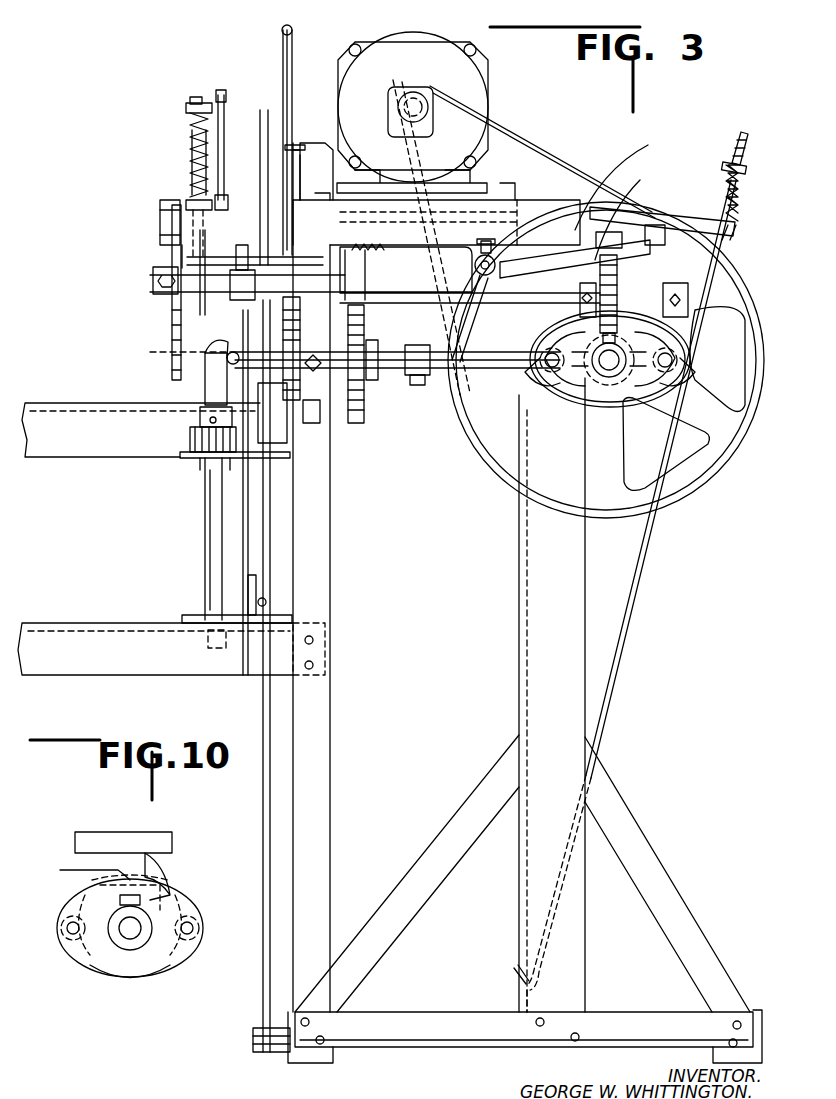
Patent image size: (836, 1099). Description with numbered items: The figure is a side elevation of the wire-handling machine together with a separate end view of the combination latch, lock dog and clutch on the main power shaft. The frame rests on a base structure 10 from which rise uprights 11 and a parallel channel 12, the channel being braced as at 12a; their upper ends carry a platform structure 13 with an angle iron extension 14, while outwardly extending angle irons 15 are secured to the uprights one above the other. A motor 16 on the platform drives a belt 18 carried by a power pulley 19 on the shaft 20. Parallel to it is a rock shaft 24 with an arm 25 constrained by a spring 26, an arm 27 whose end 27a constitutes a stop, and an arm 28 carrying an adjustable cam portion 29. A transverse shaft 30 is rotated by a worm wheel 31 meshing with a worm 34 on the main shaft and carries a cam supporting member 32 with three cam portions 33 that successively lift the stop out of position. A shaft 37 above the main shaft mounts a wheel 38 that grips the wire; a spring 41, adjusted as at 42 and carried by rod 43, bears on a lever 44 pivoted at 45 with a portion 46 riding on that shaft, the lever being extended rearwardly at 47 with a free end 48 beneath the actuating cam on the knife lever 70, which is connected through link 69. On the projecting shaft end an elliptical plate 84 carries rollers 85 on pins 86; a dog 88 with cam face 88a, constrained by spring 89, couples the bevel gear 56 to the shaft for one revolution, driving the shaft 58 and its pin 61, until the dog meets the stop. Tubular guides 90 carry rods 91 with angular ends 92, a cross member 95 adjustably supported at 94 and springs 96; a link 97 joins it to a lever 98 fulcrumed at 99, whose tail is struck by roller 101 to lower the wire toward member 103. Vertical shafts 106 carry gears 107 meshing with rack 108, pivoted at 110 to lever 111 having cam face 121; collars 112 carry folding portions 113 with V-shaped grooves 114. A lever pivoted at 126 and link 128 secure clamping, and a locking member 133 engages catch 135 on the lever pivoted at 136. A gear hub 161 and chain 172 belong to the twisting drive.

In FIG. 3, the base structure 10 is at (622, 1030).
In FIG. 3, the uprights 11 is at (330, 605).
In FIG. 3, the channel 12 is at (540, 612).
In FIG. 3, the brace 12a is at (628, 840).
In FIG. 3, the platform structure 13 is at (510, 203).
In FIG. 3, the angle iron extension 14 is at (300, 163).
In FIG. 3, the outwardly extending angle irons 15 is at (138, 665).
In FIG. 3, the motor 16 is at (470, 87).
In FIG. 3, the belt 18 is at (762, 470).
In FIG. 3, the power pulley 19 is at (700, 490).
In FIG. 3, the shaft 20 is at (622, 385).
In FIG. 10, the shaft 20 is at (130, 940).
In FIG. 3, the rock shaft 24 is at (478, 255).
In FIG. 3, the arm 25 is at (473, 310).
In FIG. 3, the spring 26 is at (364, 272).
In FIG. 3, the arm 27 is at (575, 259).
In FIG. 10, the arm 27 is at (110, 838).
In FIG. 3, the stop end 27a is at (724, 355).
In FIG. 3, the arm 28 is at (623, 209).
In FIG. 3, the adjustable cam portion 29 is at (616, 250).
In FIG. 3, the shaft 30 is at (465, 285).
In FIG. 3, the worm wheel 31 is at (625, 225).
In FIG. 3, the cam supporting member 32 is at (690, 290).
In FIG. 3, the cam portions 33 is at (700, 380).
In FIG. 3, the worm 34 is at (555, 455).
In FIG. 3, the shaft 37 is at (766, 212).
In FIG. 3, the wheel 38 is at (614, 177).
In FIG. 3, the spring 41 is at (742, 195).
In FIG. 3, the tension adjustment 42 is at (725, 150).
In FIG. 3, the rod 43 is at (615, 660).
In FIG. 3, the lever 44 is at (690, 215).
In FIG. 3, the pivot 45 is at (548, 203).
In FIG. 3, the portion riding on shaft 46 is at (298, 140).
In FIG. 3, the rearward extension 47 is at (372, 239).
In FIG. 3, the free end 48 is at (315, 143).
In FIG. 10, the bevel gear 56 is at (140, 975).
In FIG. 3, the shaft 58 is at (445, 380).
In FIG. 3, the pin 61 is at (308, 423).
In FIG. 3, the link 69 is at (294, 60).
In FIG. 3, the lever 70 is at (283, 57).
In FIG. 3, the elliptical plate 84 is at (540, 400).
In FIG. 10, the elliptical plate 84 is at (80, 955).
In FIG. 3, the rollers 85 is at (433, 457).
In FIG. 10, the rollers 85 is at (131, 971).
In FIG. 3, the pins 86 is at (535, 372).
In FIG. 10, the pins 86 is at (195, 926).
In FIG. 10, the dog 88 is at (168, 868).
In FIG. 10, the cam face 88a is at (165, 900).
In FIG. 10, the spring 89 is at (82, 872).
In FIG. 3, the tubular guides 90 is at (180, 250).
In FIG. 3, the rod 91 is at (190, 165).
In FIG. 3, the angular end 92 is at (208, 316).
In FIG. 3, the adjustable support 94 is at (192, 100).
In FIG. 3, the cross member 95 is at (216, 95).
In FIG. 3, the springs 96 is at (192, 140).
In FIG. 3, the link 97 is at (226, 140).
In FIG. 3, the lever 98 is at (262, 215).
In FIG. 3, the fulcrum 99 is at (242, 245).
In FIG. 3, the roller 101 is at (232, 350).
In FIG. 3, the member 103 is at (172, 345).
In FIG. 3, the vertically mounted shafts 106 is at (205, 520).
In FIG. 3, the gears 107 is at (188, 440).
In FIG. 3, the rack 108 is at (228, 462).
In FIG. 3, the rack pivot end 110 is at (268, 455).
In FIG. 3, the lever 111 is at (272, 535).
In FIG. 3, the collar portion 112 is at (200, 415).
In FIG. 3, the folding portions 113 is at (205, 395).
In FIG. 3, the V-shaped groove 114 is at (210, 360).
In FIG. 3, the cam face 121 is at (276, 413).
In FIG. 3, the pivot shaft 126 is at (155, 290).
In FIG. 3, the link 128 is at (160, 225).
In FIG. 3, the locking member 133 is at (248, 590).
In FIG. 3, the catch 135 is at (240, 630).
In FIG. 3, the pivot 136 is at (252, 1050).
In FIG. 3, the gear hub 161 is at (375, 400).
In FIG. 3, the chain 172 is at (335, 410).